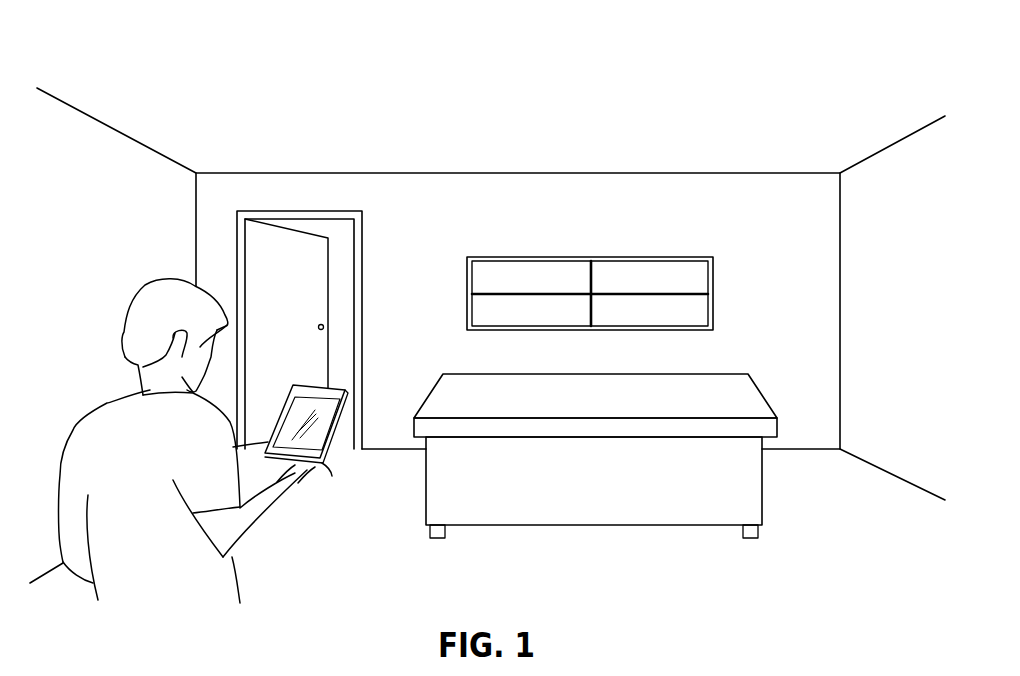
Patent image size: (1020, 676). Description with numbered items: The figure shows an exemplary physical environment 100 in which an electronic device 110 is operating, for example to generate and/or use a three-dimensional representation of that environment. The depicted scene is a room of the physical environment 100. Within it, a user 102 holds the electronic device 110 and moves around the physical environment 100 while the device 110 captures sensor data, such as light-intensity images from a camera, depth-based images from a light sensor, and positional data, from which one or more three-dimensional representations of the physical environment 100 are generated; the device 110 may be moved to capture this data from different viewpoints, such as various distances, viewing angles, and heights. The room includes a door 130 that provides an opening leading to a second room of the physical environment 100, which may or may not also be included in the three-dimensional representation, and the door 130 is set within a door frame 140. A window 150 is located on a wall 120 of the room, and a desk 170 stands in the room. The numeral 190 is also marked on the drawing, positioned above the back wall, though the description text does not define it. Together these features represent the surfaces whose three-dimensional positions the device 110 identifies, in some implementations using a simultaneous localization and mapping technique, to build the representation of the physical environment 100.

The physical environment 100 is at (117, 81).
The user 102 is at (92, 433).
The electronic device 110 is at (320, 465).
The wall 120 is at (737, 197).
The door 130 is at (267, 243).
The door frame 140 is at (363, 249).
The window 150 is at (502, 278).
The desk 170 is at (657, 527).
The wall 190 is at (518, 121).